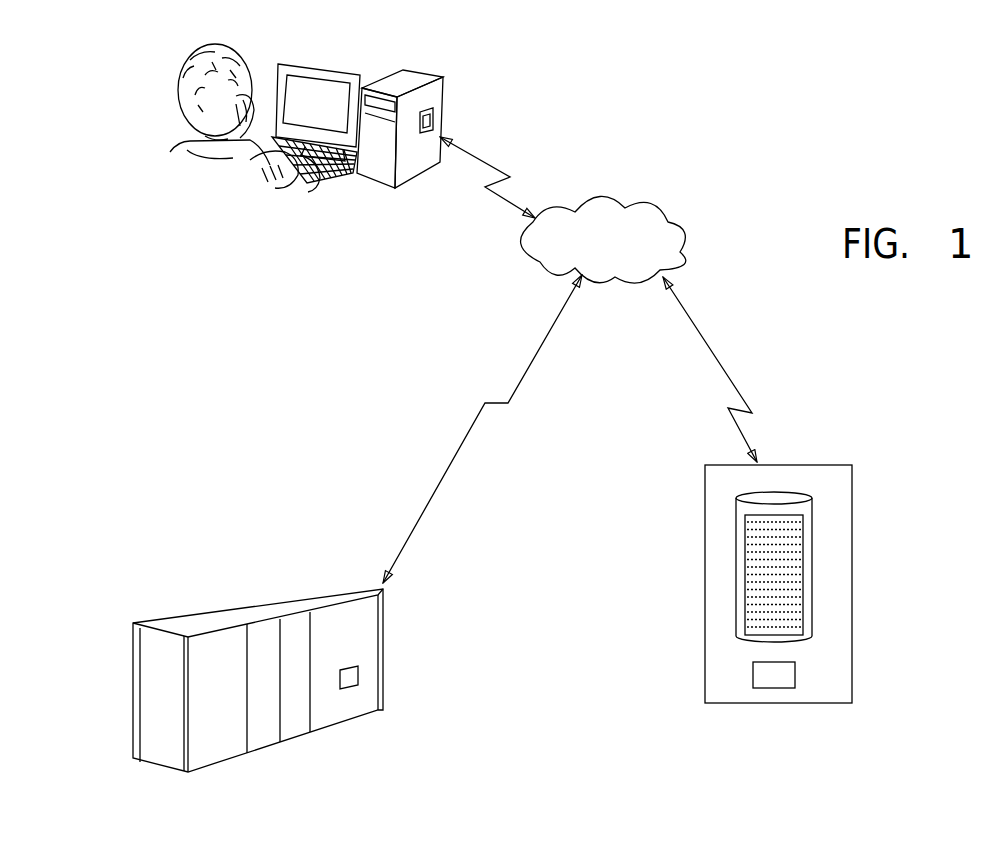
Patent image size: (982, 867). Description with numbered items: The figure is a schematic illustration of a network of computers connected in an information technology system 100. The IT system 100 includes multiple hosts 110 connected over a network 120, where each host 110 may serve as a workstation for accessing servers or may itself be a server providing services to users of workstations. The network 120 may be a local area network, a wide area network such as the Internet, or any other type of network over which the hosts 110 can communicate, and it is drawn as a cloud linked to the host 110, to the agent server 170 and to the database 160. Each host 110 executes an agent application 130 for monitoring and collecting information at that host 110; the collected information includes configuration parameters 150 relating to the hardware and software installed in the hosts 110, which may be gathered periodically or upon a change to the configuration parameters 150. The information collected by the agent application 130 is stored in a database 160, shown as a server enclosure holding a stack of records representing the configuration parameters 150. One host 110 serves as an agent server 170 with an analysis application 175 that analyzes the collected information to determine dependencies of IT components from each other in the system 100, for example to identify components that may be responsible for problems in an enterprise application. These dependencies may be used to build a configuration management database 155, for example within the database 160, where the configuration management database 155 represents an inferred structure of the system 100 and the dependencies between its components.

The information technology system 100 is at (131, 117).
The host 110 is at (393, 83).
The network 120 is at (683, 215).
The agent application 130 is at (433, 120).
The configuration parameters 150 is at (803, 565).
The configuration management database 155 is at (795, 673).
The database 160 is at (852, 547).
The agent server 170 is at (225, 603).
The analysis application 175 is at (358, 675).